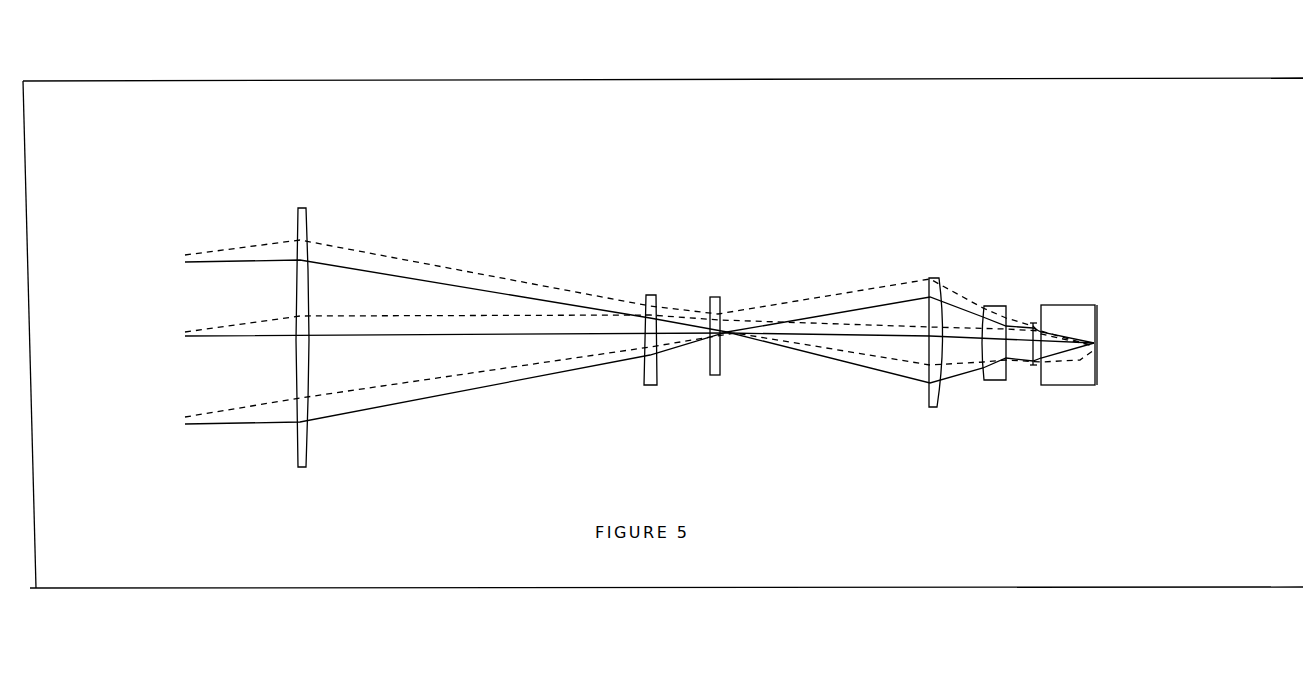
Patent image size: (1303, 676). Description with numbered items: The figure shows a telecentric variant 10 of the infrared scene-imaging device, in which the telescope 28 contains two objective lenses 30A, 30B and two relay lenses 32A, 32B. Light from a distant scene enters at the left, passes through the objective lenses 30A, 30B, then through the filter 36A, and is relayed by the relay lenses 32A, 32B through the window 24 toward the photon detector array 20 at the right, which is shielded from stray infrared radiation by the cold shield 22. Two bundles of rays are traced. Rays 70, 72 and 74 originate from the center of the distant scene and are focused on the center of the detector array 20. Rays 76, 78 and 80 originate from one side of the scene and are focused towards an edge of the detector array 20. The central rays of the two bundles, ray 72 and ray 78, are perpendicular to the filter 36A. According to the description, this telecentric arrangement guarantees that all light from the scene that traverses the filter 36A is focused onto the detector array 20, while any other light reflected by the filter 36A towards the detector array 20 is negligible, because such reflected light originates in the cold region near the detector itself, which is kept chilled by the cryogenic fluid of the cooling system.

The telecentric variant 10 is at (951, 91).
The photon detector array 20 is at (1095, 385).
The cold shield 22 is at (1097, 298).
The window 24 is at (1023, 364).
The telescope 28 is at (668, 202).
The objective lens 30A is at (312, 233).
The objective lens 30B is at (653, 290).
The relay lens 32A is at (930, 271).
The relay lens 32B is at (1002, 303).
The filter 36A is at (717, 292).
The ray 70 is at (248, 261).
The ray 72 is at (244, 336).
The ray 74 is at (255, 425).
The ray 76 is at (532, 282).
The ray 78 is at (378, 315).
The ray 80 is at (388, 382).